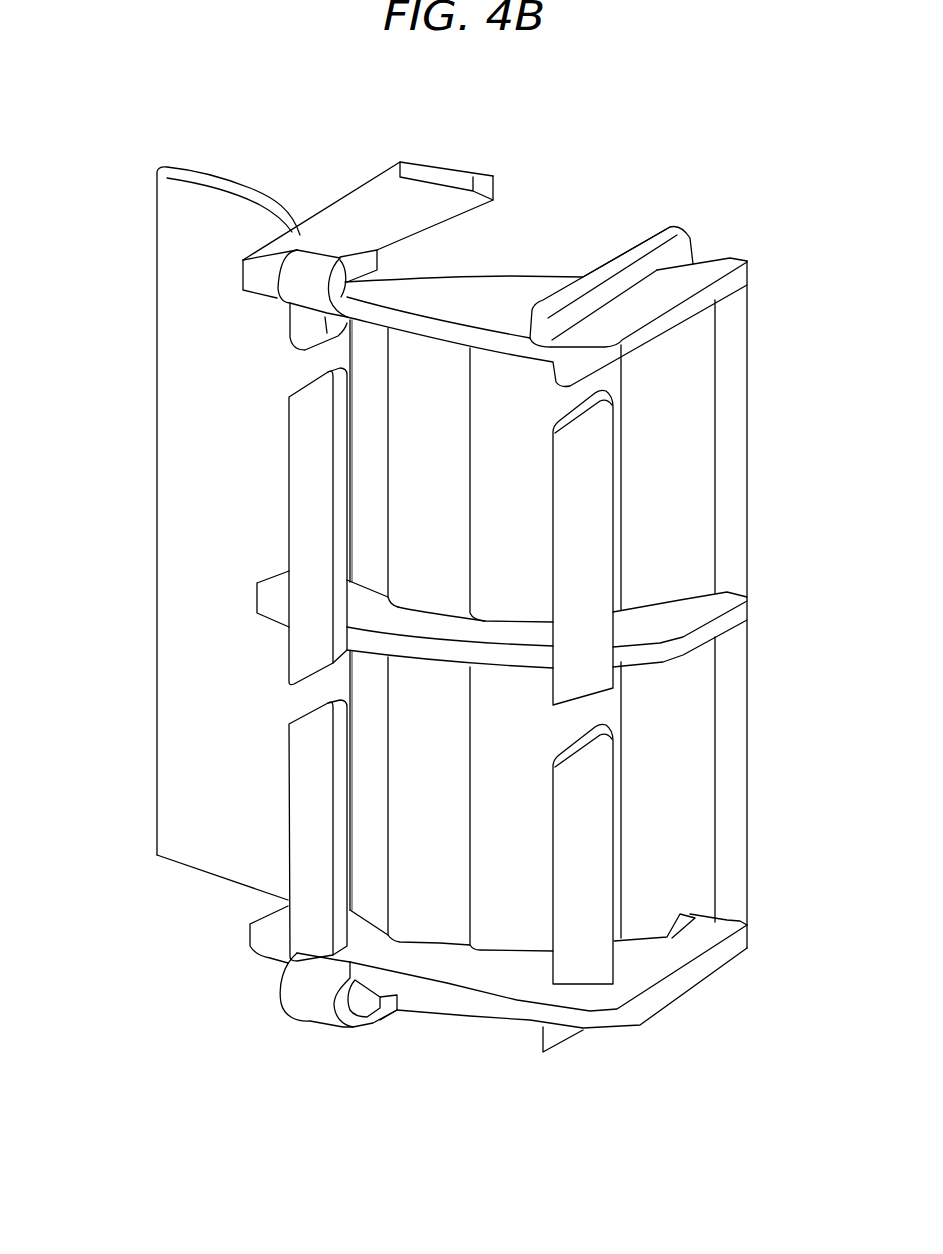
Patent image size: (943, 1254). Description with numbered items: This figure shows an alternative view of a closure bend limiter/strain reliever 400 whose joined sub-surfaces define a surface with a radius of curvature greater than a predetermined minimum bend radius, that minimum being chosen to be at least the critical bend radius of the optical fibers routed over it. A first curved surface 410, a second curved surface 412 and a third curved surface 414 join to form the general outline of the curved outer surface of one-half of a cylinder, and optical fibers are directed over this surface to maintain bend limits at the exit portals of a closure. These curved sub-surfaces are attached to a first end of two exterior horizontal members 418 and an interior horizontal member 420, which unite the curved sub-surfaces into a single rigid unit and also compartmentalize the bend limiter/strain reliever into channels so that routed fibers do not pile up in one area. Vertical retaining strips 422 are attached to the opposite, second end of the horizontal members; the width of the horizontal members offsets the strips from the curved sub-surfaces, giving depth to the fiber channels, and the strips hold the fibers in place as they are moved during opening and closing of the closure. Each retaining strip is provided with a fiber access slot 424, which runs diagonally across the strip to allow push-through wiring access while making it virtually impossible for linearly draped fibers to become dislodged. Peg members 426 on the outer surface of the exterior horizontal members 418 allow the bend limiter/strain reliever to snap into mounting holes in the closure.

The bend limiter/strain reliever 400 is at (162, 114).
The first curved surface 410 is at (193, 252).
The second curved surface 412 is at (503, 912).
The third curved surface 414 is at (730, 373).
The exterior horizontal member 418 is at (487, 303).
The interior horizontal member 420 is at (678, 617).
The vertical retaining strip 422 is at (590, 497).
The fiber access slot 424 is at (313, 690).
The peg member 426 is at (350, 220).